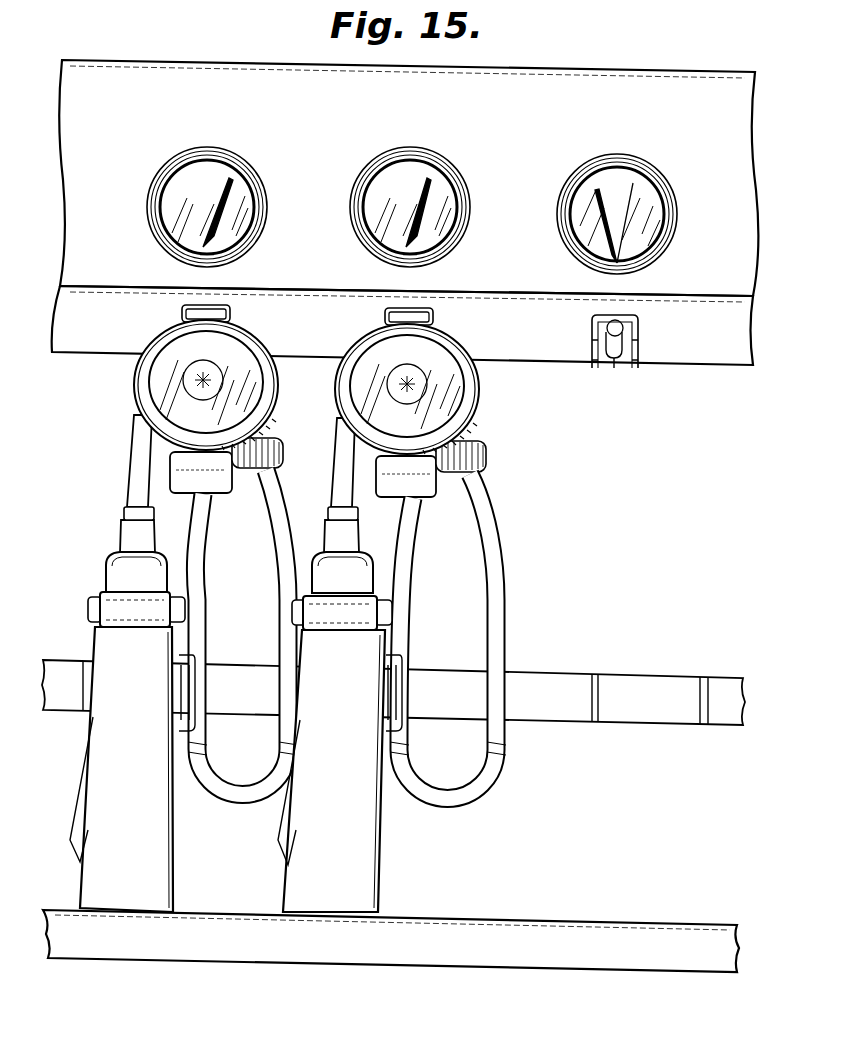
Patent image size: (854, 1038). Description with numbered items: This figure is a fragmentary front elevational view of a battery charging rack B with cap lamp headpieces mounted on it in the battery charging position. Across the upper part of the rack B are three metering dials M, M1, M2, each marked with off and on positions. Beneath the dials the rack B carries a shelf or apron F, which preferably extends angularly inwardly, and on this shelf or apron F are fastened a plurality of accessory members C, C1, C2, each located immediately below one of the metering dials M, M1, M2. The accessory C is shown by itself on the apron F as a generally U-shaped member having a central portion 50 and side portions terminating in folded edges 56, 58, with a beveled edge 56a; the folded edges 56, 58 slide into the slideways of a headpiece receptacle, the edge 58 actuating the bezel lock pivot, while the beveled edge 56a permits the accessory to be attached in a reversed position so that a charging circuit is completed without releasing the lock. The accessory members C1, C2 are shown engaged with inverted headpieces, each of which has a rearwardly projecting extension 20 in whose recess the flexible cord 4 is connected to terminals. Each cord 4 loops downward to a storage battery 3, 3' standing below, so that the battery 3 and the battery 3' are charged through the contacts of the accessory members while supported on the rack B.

The charging rack B is at (733, 265).
The shelf or apron F is at (737, 340).
The metering dial M2 is at (235, 163).
The metering dial M1 is at (438, 163).
The metering dial M is at (660, 173).
The accessory member C2 is at (232, 312).
The accessory member C1 is at (436, 318).
The battery charging accessory C is at (614, 348).
The central portion 50 is at (631, 318).
The folded edge 58 is at (597, 330).
The folded edge 56 is at (633, 341).
The beveled edge 56a is at (620, 366).
The extension 20 is at (447, 636).
The flexible cord 4 is at (510, 637).
The handle 3' is at (137, 709).
The storage battery 3 is at (343, 709).